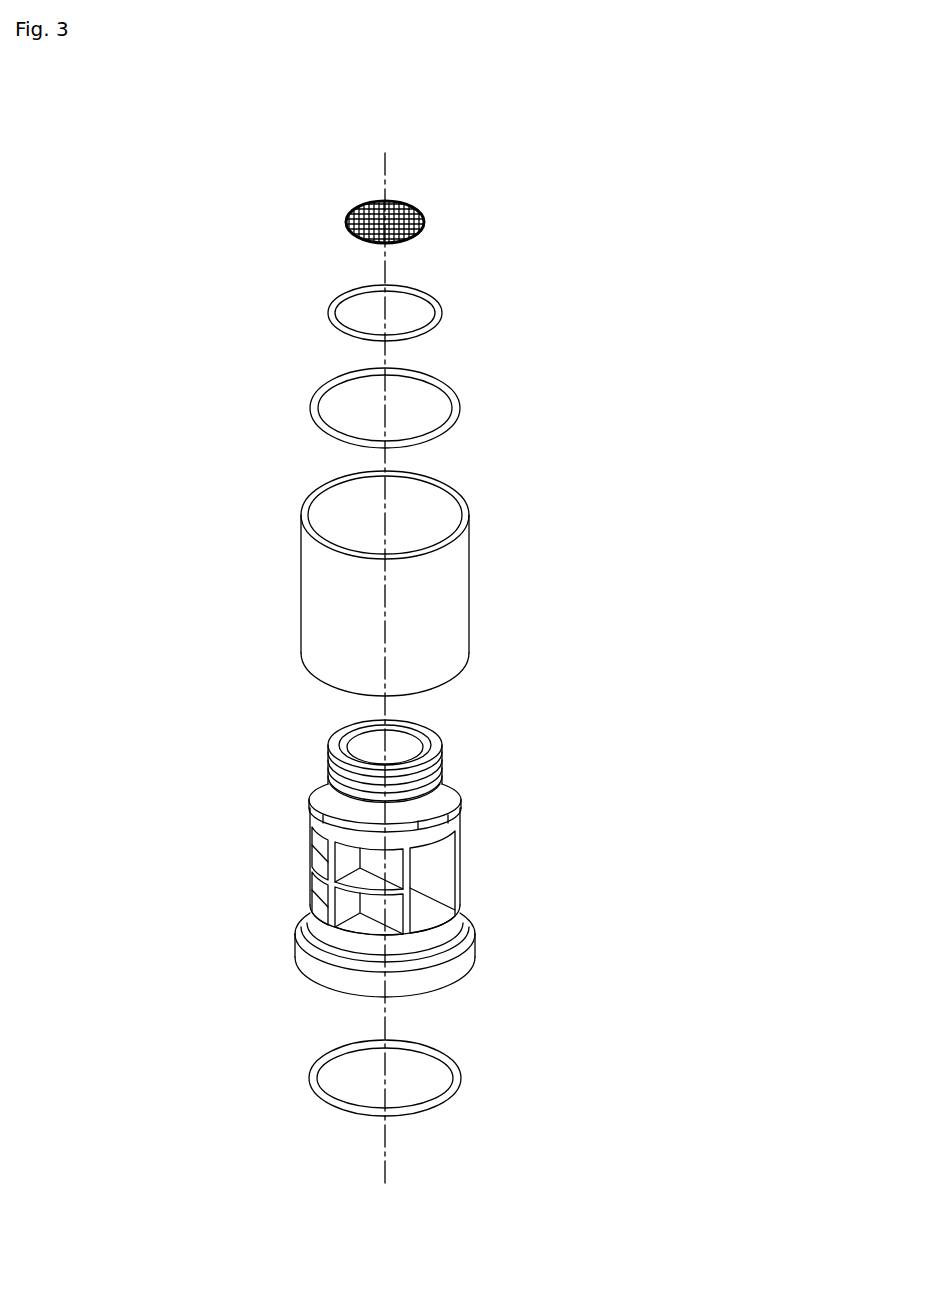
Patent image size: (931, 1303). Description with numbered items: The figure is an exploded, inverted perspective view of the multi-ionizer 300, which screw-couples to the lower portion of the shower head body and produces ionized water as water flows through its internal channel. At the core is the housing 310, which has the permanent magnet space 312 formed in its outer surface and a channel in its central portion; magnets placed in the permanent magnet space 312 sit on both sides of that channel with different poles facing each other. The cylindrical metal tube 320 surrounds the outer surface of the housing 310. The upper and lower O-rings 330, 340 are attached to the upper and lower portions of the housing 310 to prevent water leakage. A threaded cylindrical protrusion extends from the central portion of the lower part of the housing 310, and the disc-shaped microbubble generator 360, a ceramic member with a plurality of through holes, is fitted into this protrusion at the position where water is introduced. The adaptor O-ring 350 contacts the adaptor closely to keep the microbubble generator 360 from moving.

The multi-ionizer 300 is at (242, 355).
The housing 310 is at (508, 782).
The permanent magnet space 312 is at (437, 892).
The cylindrical metal tube 320 is at (428, 588).
The upper O-ring 330 is at (460, 1073).
The lower O-ring 340 is at (460, 400).
The adaptor O-ring 350 is at (440, 300).
The microbubble generator 360 is at (422, 205).